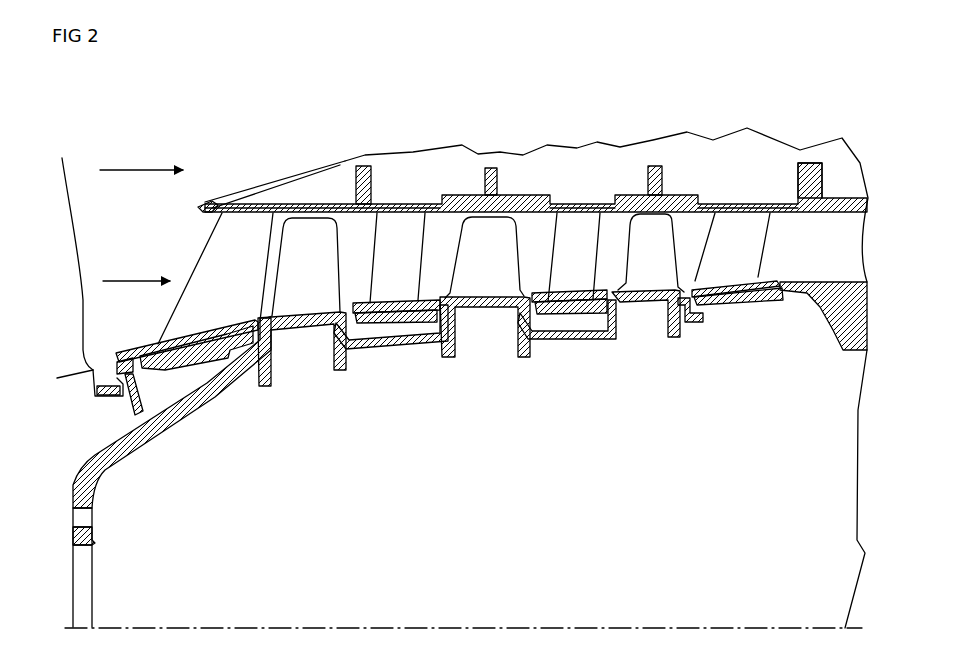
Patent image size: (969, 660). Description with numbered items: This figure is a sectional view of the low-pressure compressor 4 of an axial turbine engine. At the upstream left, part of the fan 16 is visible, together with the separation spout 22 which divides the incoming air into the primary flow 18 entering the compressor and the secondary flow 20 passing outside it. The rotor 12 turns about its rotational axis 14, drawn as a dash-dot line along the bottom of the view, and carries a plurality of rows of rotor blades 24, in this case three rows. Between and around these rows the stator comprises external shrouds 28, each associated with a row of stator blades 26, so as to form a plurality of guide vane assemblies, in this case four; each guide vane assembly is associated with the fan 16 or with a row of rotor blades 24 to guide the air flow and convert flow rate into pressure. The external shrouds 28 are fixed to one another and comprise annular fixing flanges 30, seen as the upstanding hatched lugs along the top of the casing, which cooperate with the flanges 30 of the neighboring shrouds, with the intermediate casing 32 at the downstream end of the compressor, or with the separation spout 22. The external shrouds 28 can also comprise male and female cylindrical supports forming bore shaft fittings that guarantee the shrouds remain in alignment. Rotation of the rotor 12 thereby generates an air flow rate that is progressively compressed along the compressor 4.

The low-pressure compressor 4 is at (196, 128).
The rotor 12 is at (105, 506).
The rotational axis 14 is at (545, 628).
The fan 16 is at (78, 333).
The primary flow 18 is at (143, 273).
The secondary flow 20 is at (146, 163).
The separation spout 22 is at (197, 210).
The rotor blades 24 is at (324, 271).
The stator blades 26 is at (240, 271).
The external shrouds 28 is at (432, 204).
The annular fixing flanges 30 is at (372, 193).
The intermediate casing 32 is at (838, 320).